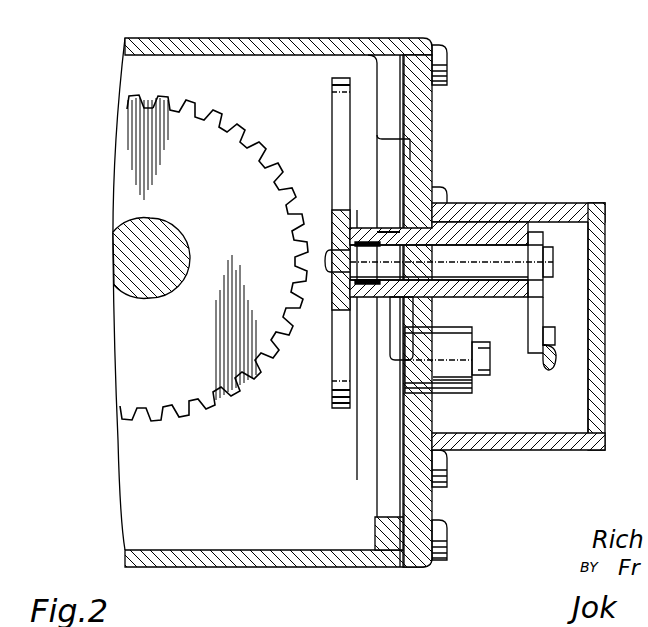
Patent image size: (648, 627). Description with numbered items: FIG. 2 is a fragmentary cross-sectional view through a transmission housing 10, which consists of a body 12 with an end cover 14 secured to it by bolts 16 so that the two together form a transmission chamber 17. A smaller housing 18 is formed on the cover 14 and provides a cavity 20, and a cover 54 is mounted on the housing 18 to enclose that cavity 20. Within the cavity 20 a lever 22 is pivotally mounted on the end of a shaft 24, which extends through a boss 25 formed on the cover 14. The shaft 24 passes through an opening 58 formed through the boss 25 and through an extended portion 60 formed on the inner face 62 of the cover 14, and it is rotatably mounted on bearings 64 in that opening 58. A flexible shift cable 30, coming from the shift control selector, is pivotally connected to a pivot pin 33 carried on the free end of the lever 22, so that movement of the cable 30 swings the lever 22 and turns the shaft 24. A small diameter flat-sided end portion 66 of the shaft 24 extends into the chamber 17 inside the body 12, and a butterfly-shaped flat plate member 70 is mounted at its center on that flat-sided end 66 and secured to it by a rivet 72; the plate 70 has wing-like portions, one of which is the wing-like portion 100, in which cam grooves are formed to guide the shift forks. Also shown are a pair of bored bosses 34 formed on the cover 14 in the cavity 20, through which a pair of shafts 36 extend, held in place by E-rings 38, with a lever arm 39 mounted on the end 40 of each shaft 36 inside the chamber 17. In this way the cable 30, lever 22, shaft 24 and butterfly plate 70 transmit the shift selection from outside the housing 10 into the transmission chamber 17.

The transmission housing 10 is at (116, 75).
The body 12 is at (318, 62).
The end cover 14 is at (423, 107).
The bolts 16 is at (447, 56).
The transmission chamber 17 is at (248, 60).
The smaller housing 18 is at (510, 210).
The cavity 20 is at (575, 228).
The lever 22 is at (537, 318).
The shaft 24 is at (473, 250).
The boss 25 is at (503, 290).
The flexible shift cable 30 is at (548, 366).
The pivot pin 33 is at (556, 338).
The bored bosses 34 is at (446, 375).
The shafts 36 is at (480, 360).
The E-rings 38 is at (472, 380).
The lever arm 39 is at (366, 395).
The end of shaft 40 is at (380, 397).
The cover 54 is at (606, 250).
The opening 58 is at (443, 282).
The extended portion 60 is at (380, 232).
The inner face 62 is at (412, 153).
The bearings 64 is at (507, 242).
The flat-sided end portion 66 is at (330, 258).
The butterfly-shaped flat plate member 70 is at (326, 130).
The rivet 72 is at (336, 236).
The wing-like portion 100 is at (325, 354).